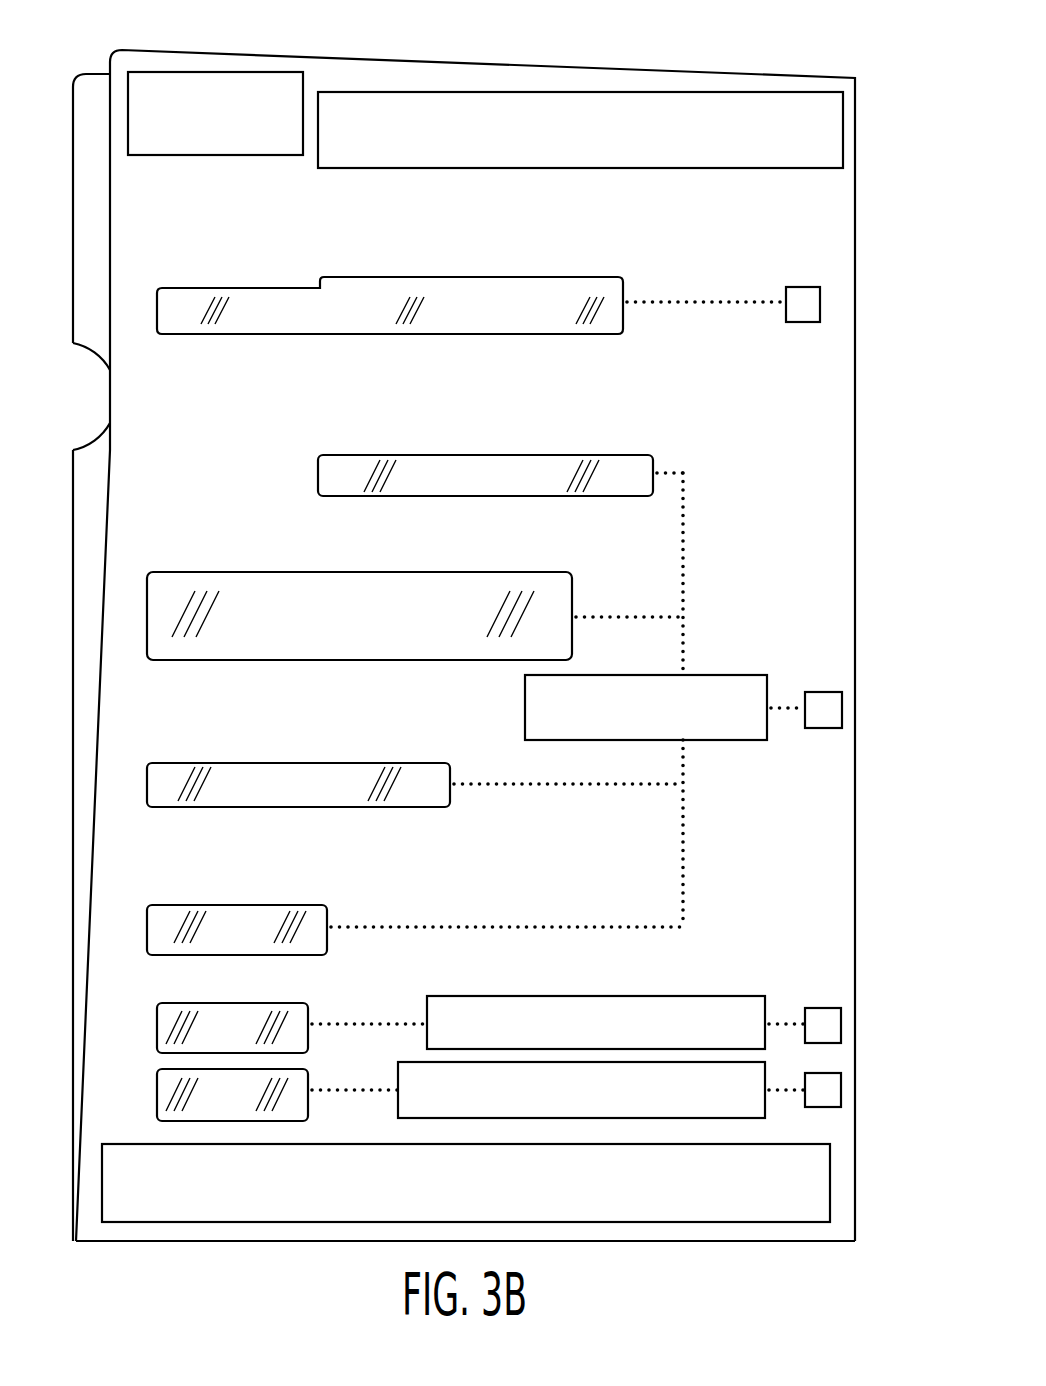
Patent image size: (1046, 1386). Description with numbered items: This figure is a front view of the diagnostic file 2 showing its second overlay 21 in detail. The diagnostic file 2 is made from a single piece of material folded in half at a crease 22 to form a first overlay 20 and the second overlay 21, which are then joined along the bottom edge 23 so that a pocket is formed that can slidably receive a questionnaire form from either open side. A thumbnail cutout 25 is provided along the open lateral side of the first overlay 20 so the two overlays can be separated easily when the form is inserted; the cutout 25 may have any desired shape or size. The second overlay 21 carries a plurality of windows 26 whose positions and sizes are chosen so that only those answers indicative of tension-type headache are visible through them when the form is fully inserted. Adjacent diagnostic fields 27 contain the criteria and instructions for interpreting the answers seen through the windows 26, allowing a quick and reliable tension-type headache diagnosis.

The diagnostic file 2 is at (803, 53).
The first overlay 20 is at (73, 215).
The second overlay 21 is at (104, 848).
The crease 22 is at (856, 563).
The bottom edge 23 is at (211, 1245).
The thumbnail cutout 25 is at (95, 358).
The windows 26 is at (442, 277).
The diagnostic fields 27 is at (557, 92).